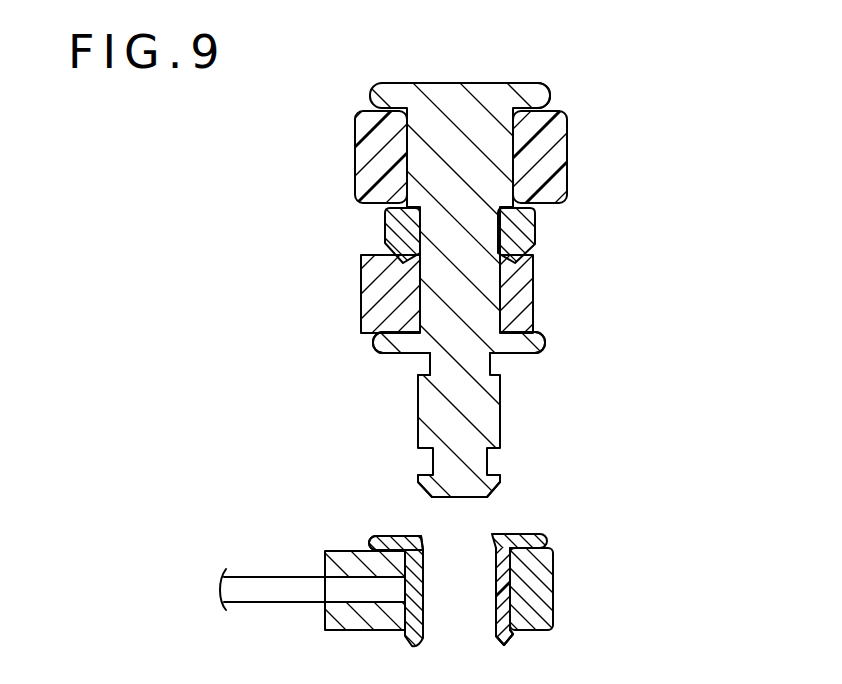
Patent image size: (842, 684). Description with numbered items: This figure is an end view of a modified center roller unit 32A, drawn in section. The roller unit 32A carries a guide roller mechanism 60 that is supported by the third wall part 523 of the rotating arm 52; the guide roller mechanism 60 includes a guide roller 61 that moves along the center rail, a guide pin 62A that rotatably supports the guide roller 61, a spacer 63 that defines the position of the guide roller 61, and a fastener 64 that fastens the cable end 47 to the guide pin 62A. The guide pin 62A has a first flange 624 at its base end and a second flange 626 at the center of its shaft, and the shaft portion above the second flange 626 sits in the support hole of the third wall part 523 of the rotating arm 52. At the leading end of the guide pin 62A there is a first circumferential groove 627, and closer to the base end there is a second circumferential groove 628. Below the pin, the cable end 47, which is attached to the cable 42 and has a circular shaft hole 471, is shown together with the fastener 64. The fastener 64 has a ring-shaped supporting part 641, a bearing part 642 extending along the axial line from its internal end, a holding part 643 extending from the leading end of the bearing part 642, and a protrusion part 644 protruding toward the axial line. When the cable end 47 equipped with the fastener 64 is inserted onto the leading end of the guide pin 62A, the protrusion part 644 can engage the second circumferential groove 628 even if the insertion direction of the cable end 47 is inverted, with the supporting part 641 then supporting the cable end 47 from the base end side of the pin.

The roller unit 32A is at (672, 100).
The guide roller mechanism 60 is at (350, 91).
The guide pin 62A is at (519, 84).
The first flange 624 is at (553, 94).
The guide roller 61 is at (566, 128).
The spacer 63 is at (536, 220).
The third wall part 523 is at (451, 295).
The rotating arm 52 is at (535, 270).
The second flange 626 is at (544, 336).
The second circumferential groove 628 is at (427, 373).
The circumferential groove 627 is at (494, 474).
The cable 42 is at (265, 603).
The cable end 47 is at (348, 551).
The supporting part 641 is at (373, 536).
The protrusion part 644 is at (424, 546).
The fastener 64 is at (548, 538).
The shaft hole 471 is at (507, 574).
The bearing part 642 is at (514, 598).
The holding part 643 is at (518, 643).